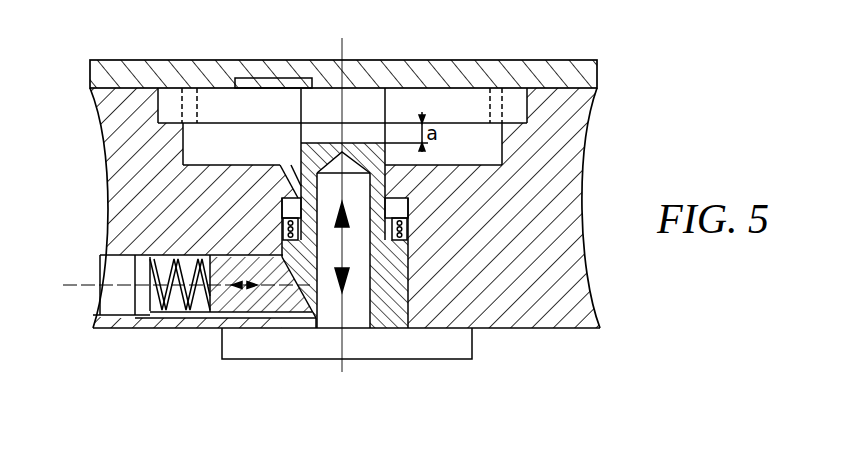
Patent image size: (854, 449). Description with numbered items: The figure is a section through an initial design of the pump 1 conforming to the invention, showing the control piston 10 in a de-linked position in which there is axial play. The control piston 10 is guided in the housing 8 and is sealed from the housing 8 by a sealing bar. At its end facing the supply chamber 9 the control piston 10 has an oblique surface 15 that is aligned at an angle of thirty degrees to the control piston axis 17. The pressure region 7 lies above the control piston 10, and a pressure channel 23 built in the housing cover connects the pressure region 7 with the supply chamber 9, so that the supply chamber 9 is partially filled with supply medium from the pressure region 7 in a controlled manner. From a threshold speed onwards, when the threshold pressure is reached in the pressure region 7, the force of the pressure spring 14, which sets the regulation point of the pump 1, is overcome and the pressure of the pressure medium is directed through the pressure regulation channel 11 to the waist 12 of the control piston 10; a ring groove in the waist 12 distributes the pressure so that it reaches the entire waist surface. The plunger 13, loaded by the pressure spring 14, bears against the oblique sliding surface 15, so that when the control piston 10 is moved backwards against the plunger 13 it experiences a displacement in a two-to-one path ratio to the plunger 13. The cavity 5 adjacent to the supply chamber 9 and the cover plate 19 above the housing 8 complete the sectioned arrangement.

The pump 1 is at (627, 322).
The cavity 5 is at (459, 151).
The pressure region 7 is at (229, 151).
The housing 8 is at (562, 252).
The supply chamber 9 is at (358, 103).
The control piston 10 is at (393, 300).
The pressure regulation channel 11 is at (297, 176).
The waist 12 is at (408, 205).
The plunger 13 is at (224, 310).
The pressure spring 14 is at (183, 303).
The oblique surface 15 is at (305, 295).
The control piston axis 17 is at (345, 308).
The cover plate 19 is at (537, 72).
The pressure channel 23 is at (275, 78).